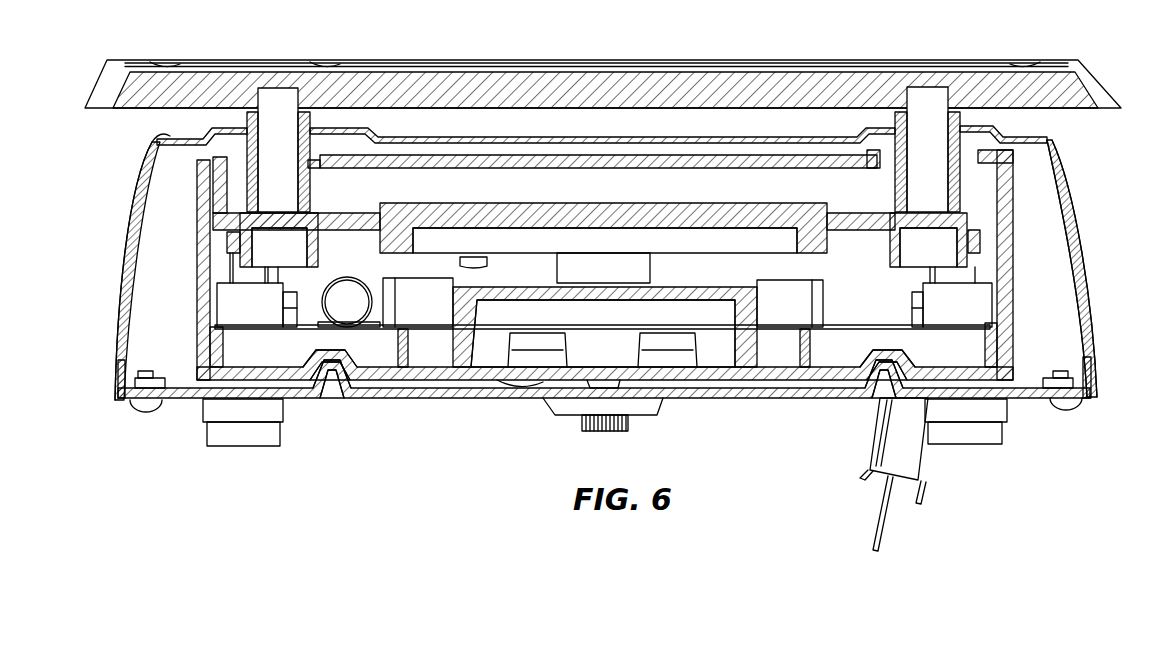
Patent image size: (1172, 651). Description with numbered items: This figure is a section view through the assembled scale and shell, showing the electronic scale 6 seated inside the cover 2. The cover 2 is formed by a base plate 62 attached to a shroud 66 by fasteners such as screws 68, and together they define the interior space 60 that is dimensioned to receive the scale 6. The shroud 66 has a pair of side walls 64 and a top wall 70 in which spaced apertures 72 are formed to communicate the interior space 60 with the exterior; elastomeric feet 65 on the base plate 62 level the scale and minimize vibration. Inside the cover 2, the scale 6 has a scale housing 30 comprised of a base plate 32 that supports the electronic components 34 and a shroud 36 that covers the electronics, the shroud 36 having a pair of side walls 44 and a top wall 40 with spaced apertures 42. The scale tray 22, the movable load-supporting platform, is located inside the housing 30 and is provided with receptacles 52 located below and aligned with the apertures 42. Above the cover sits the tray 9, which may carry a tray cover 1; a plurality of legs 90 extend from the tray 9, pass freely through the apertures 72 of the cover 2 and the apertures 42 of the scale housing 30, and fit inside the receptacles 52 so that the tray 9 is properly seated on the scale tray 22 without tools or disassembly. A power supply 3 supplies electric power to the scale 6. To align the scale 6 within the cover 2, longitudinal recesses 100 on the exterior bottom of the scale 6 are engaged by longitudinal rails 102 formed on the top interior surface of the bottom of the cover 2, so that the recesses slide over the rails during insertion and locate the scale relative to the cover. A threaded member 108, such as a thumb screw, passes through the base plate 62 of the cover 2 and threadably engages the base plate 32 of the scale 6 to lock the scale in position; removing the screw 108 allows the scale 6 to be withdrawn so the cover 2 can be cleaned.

The tray cover 1 is at (1092, 73).
The cover 2 is at (1082, 207).
The power supply 3 is at (948, 468).
The electronic scale 6 is at (1036, 316).
The tray 9 is at (745, 80).
The scale tray 22 is at (662, 205).
The scale housing 30 is at (1030, 268).
The base plate 32 is at (403, 382).
The electronic components 34 is at (832, 268).
The shroud 36 is at (1013, 158).
The top wall 40 is at (605, 155).
The apertures 42 is at (320, 172).
The side walls 44 is at (199, 280).
The receptacles 52 is at (240, 188).
The interior space 60 is at (150, 320).
The base plate 62 is at (752, 396).
The side walls 64 is at (135, 262).
The elastomeric feet 65 is at (242, 437).
The shroud 66 is at (137, 155).
The screws 68 is at (145, 403).
The top wall 70 is at (478, 140).
The apertures 72 is at (227, 123).
The legs 90 is at (312, 116).
The longitudinal recesses 100 is at (305, 357).
The longitudinal rails 102 is at (330, 398).
The threaded member 108 is at (632, 428).